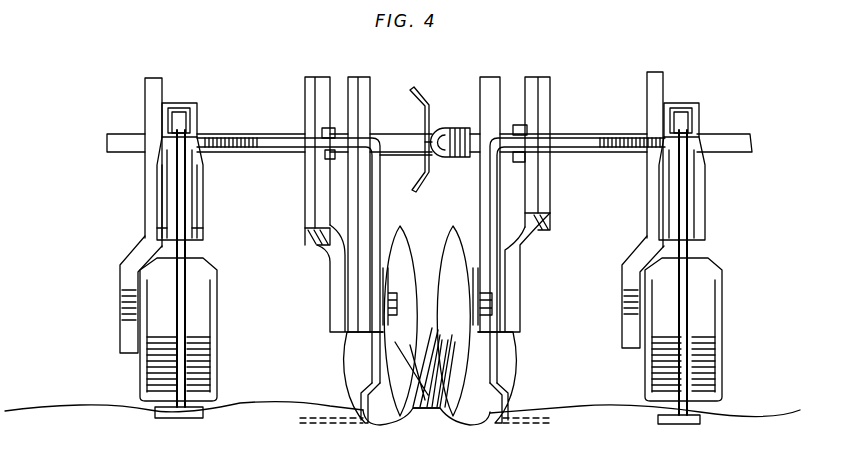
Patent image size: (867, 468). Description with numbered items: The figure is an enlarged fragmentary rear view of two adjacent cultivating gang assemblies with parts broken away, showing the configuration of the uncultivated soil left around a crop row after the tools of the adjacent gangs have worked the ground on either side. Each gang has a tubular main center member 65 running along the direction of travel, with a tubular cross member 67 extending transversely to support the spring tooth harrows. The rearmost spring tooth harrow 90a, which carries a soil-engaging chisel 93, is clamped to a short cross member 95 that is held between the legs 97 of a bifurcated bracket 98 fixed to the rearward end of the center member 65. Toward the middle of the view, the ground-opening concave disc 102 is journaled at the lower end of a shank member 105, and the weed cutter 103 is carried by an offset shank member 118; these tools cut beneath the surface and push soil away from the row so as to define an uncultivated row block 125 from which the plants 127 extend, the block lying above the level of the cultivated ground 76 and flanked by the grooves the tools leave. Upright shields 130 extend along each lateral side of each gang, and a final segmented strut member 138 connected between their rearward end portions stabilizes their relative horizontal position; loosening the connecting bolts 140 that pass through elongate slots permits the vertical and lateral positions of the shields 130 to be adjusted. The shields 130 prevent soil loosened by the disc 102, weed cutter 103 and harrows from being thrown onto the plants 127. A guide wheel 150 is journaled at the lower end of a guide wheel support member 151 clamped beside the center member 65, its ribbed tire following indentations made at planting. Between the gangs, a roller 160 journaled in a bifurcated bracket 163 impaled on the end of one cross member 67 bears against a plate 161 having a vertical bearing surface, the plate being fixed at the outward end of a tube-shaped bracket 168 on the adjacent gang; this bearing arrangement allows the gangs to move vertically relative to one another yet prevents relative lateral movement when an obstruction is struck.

The main center member 65 is at (177, 112).
The cross member 67 is at (122, 145).
The cultivated ground 76 is at (105, 408).
The rearmost spring tooth harrow 90a is at (185, 308).
The chisel 93 is at (197, 418).
The short cross member 95 is at (200, 228).
The legs of bifurcated bracket 97 is at (195, 187).
The bifurcated bracket 98 is at (200, 112).
The ground-opening concave disc 102 is at (467, 245).
The weed cutter 103 is at (300, 421).
The shank member 105 is at (358, 82).
The offset shank member 118 is at (322, 247).
The uncultivated row block 125 is at (433, 410).
The plants 127 is at (413, 410).
The upright shield 130 is at (378, 353).
The final segmented strut member 138 is at (280, 135).
The connecting bolt 140 is at (332, 156).
The guide wheel 150 is at (213, 337).
The guide wheel support member 151 is at (120, 283).
The roller 160 is at (432, 130).
The bearing plate 161 is at (418, 95).
The bifurcated roller bracket 163 is at (462, 144).
The tube-shaped bracket 168 is at (393, 143).